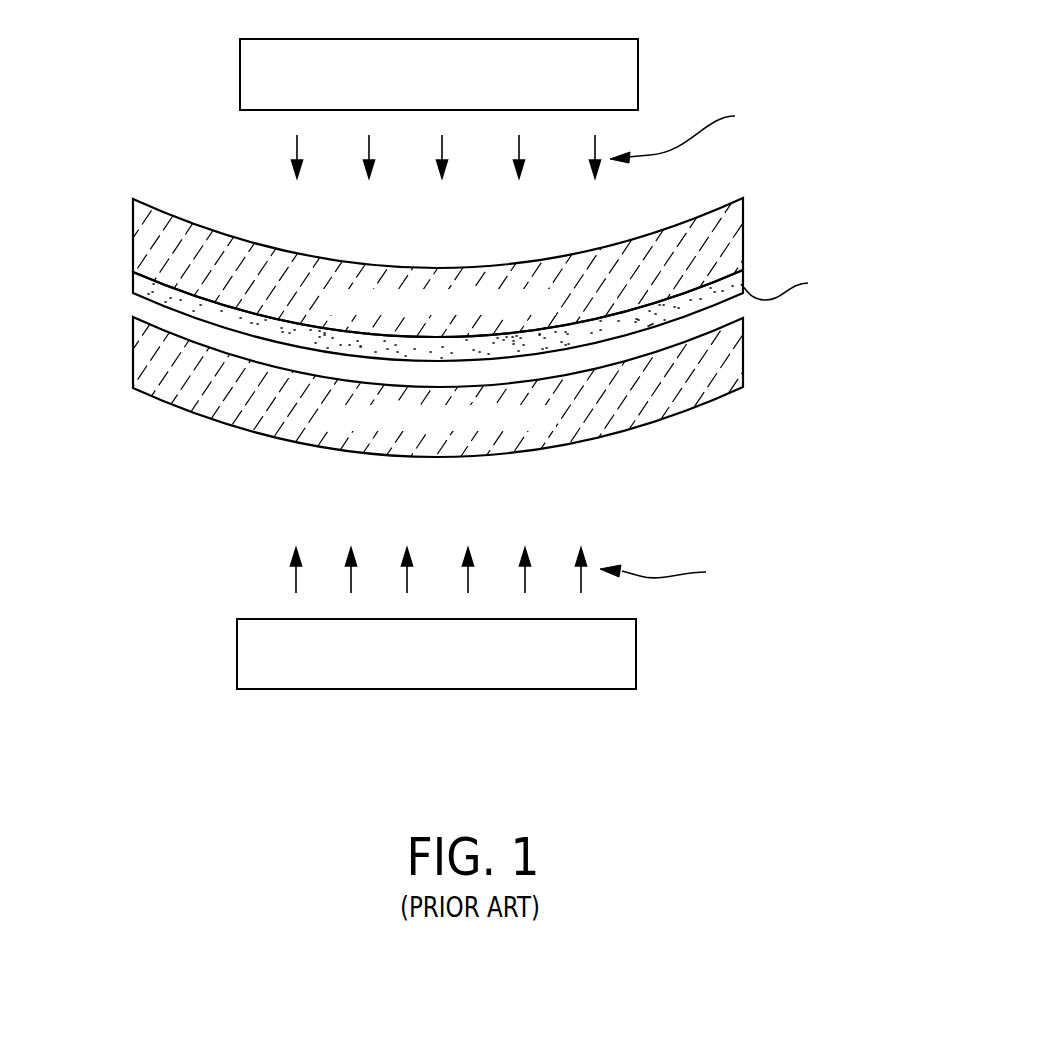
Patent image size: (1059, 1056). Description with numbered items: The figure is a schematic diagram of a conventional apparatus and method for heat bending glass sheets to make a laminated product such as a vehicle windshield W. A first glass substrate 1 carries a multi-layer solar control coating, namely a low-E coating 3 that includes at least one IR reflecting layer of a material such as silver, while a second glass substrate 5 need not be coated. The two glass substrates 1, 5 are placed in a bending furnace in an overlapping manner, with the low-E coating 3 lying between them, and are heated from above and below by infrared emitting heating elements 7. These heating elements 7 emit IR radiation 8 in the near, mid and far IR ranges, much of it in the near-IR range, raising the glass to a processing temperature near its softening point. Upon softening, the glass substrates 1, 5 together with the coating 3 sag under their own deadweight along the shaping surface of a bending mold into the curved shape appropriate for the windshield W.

The vehicle windshield W is at (473, 277).
The first glass substrate 1 is at (145, 243).
The low-E coating 3 is at (145, 283).
The second glass substrate 5 is at (145, 366).
The heating elements 7 is at (640, 78).
The IR radiation 8 is at (292, 155).